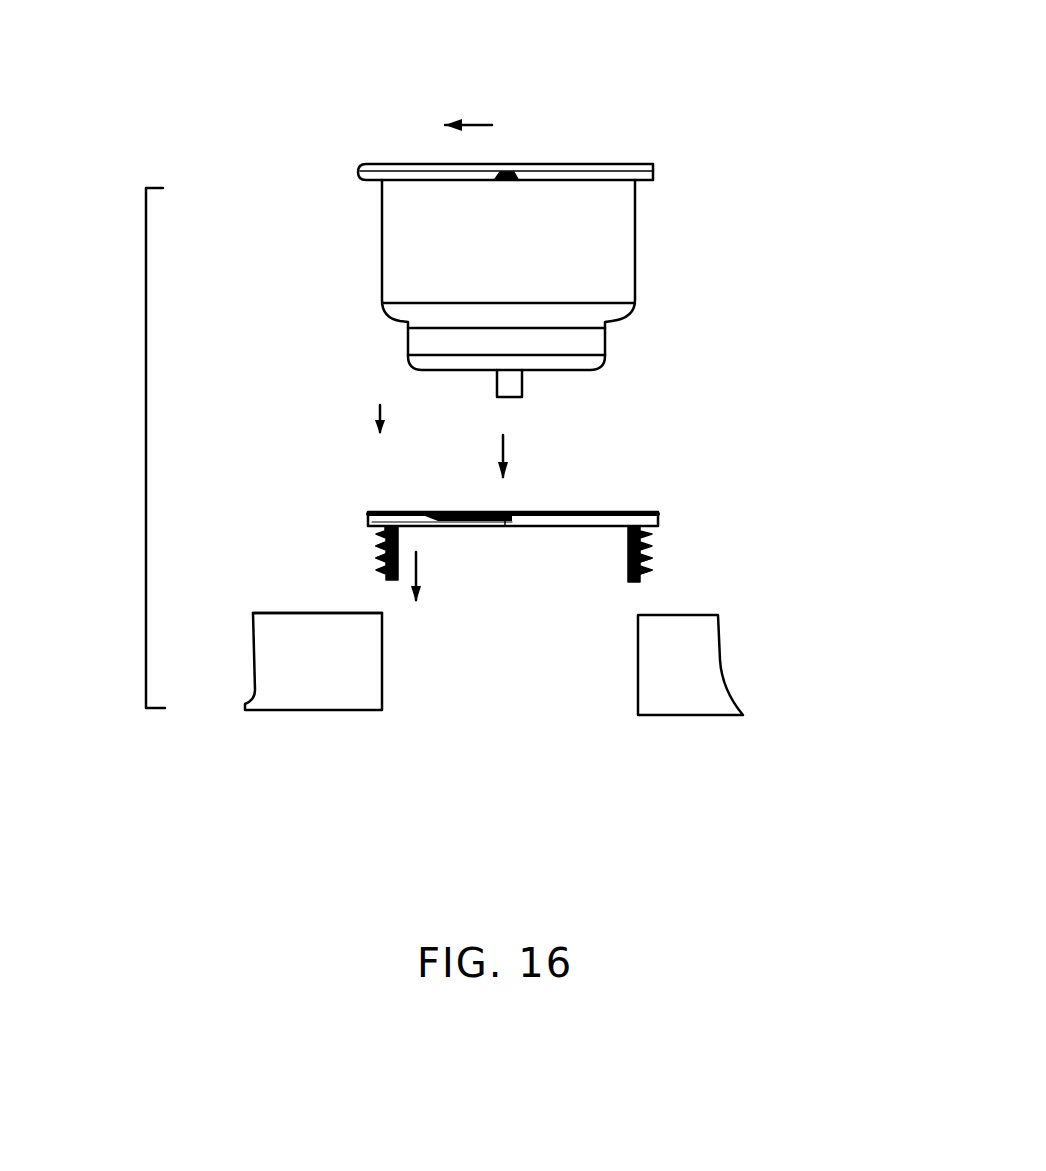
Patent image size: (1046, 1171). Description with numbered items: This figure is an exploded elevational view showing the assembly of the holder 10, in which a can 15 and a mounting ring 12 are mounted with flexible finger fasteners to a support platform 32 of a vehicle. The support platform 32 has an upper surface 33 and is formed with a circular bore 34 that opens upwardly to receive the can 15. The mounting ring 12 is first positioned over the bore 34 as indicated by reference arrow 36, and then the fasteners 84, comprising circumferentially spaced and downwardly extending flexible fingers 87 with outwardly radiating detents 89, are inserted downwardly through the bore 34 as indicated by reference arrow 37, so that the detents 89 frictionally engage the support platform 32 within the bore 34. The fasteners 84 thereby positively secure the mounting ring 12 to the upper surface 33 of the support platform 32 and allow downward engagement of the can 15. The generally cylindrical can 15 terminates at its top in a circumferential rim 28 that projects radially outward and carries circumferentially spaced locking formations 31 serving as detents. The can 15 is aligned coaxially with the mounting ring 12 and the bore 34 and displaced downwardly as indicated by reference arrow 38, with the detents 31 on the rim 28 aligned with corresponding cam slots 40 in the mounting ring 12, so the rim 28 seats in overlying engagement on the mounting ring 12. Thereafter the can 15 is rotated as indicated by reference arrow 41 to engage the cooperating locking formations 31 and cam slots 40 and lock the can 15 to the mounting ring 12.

The holder 10 is at (146, 455).
The mounting ring 12 is at (657, 512).
The can 15 is at (648, 134).
The rim 28 is at (653, 170).
The locking formations 31 is at (512, 170).
The support platform 32 is at (310, 690).
The upper surface 33 is at (279, 612).
The bore 34 is at (638, 638).
The reference arrow 36 is at (418, 568).
The reference arrow 37 is at (378, 412).
The reference arrow 38 is at (515, 447).
The cam slots 40 is at (505, 526).
The reference arrow 41 is at (478, 125).
The fasteners 84 is at (365, 550).
The flexible fingers 87 is at (630, 558).
The detents 89 is at (378, 567).